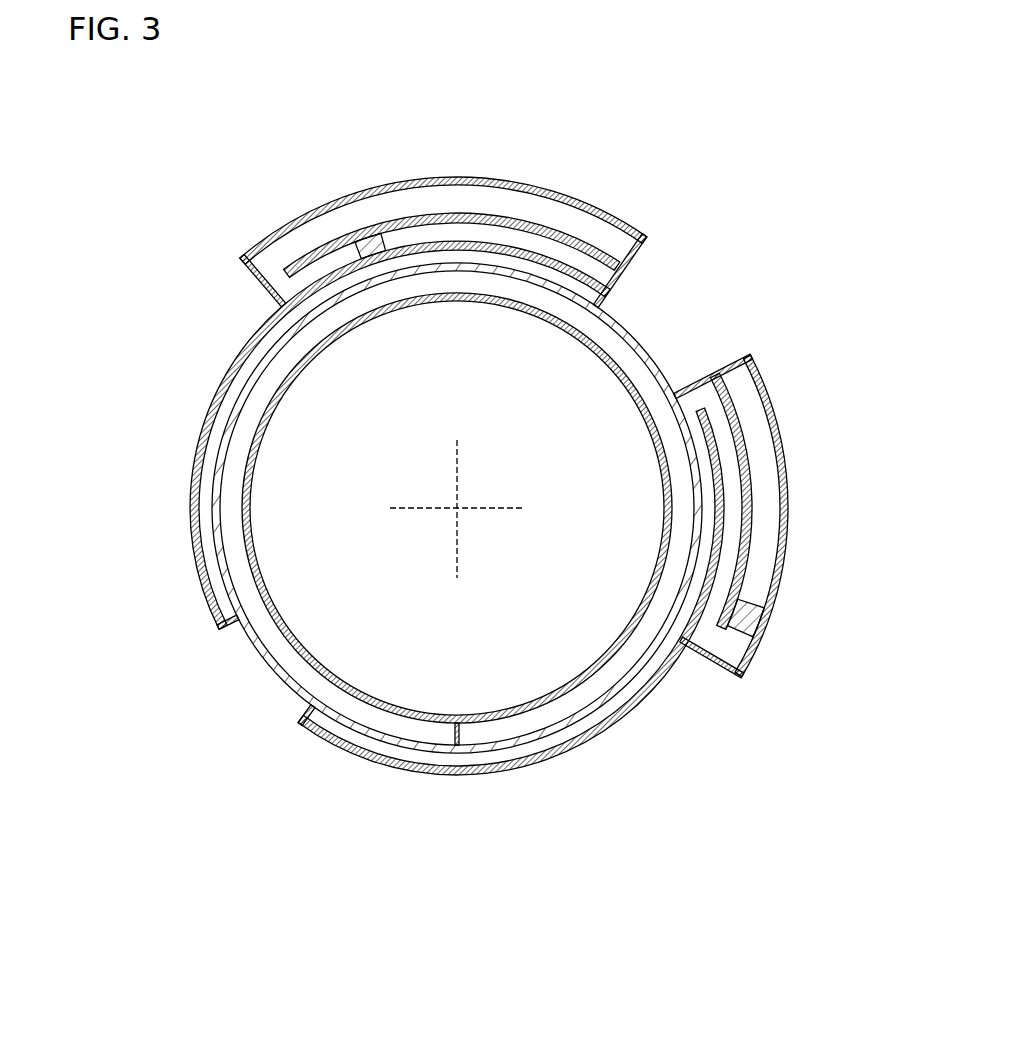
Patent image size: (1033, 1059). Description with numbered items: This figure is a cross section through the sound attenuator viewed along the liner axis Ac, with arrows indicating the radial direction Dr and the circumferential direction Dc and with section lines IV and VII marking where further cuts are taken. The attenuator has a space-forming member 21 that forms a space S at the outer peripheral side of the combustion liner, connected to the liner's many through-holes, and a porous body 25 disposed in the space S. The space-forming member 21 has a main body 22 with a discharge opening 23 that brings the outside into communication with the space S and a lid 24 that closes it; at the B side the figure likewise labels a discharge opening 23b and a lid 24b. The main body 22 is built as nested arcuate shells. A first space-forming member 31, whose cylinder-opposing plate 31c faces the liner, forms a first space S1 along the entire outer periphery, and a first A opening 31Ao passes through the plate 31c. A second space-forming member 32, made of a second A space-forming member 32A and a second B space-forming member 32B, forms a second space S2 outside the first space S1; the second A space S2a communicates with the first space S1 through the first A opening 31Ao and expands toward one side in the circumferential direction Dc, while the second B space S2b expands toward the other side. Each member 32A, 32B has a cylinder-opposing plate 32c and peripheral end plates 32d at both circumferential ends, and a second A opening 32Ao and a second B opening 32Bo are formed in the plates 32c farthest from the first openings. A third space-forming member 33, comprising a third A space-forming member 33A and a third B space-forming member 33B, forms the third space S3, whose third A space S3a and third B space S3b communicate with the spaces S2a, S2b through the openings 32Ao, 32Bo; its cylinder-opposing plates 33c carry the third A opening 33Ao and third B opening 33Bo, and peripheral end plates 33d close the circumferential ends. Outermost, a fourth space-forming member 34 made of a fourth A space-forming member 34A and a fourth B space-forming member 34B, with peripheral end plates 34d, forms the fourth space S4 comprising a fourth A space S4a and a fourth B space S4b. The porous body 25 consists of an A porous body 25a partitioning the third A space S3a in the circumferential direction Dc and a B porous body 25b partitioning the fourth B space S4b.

The space-forming member 21 is at (392, 538).
The main body 22 is at (272, 686).
The discharge opening 23 is at (838, 671).
The seal member (second) 23b is at (760, 637).
The lid 24 is at (841, 646).
The spacer (second) 24b is at (766, 622).
The porous body 25 is at (537, 491).
The A porous body 25a is at (356, 245).
The B porous body 25b is at (752, 630).
The first space-forming member 31 is at (407, 508).
The cylinder-opposing plate 31c is at (258, 658).
The first A opening 31Ao is at (226, 600).
The second space-forming member 32 is at (456, 516).
The second A space-forming member 32A is at (195, 510).
The second B space-forming member 32B is at (405, 776).
The cylinder-opposing plate 32c is at (212, 392).
The peripheral end plates 32d is at (603, 302).
The second A opening 32Ao is at (600, 298).
The second B opening 32Bo is at (707, 415).
The third space-forming member 33 is at (544, 428).
The third A space-forming member 33A is at (548, 224).
The third B space-forming member 33B is at (752, 481).
The cylinder-opposing plate 33c is at (492, 216).
The peripheral end plates 33d is at (282, 305).
The third A opening 33Ao is at (283, 275).
The third B opening 33Bo is at (728, 633).
The fourth space-forming member 34 is at (528, 425).
The fourth A space-forming member 34A is at (458, 178).
The fourth B space-forming member 34B is at (785, 440).
The peripheral end plates 34d is at (243, 258).
The space S is at (488, 486).
The first space S1 is at (292, 668).
The second space S2 is at (323, 646).
The second A space S2a is at (205, 466).
The second B space S2b is at (528, 750).
The third space S3 is at (746, 362).
The third A space S3a is at (549, 248).
The third B space S3b is at (730, 549).
The fourth space S4 is at (631, 262).
The fourth A space S4a is at (391, 205).
The fourth B space S4b is at (756, 418).
The central axis Ac is at (457, 508).
The radial direction Dr is at (417, 563).
The circumferential direction Dc is at (309, 899).
The section line IV is at (346, 182).
The section line VII is at (646, 570).